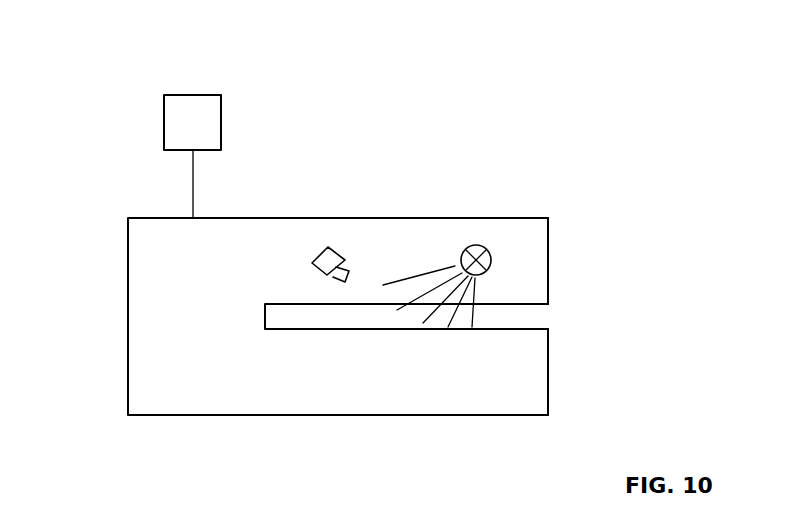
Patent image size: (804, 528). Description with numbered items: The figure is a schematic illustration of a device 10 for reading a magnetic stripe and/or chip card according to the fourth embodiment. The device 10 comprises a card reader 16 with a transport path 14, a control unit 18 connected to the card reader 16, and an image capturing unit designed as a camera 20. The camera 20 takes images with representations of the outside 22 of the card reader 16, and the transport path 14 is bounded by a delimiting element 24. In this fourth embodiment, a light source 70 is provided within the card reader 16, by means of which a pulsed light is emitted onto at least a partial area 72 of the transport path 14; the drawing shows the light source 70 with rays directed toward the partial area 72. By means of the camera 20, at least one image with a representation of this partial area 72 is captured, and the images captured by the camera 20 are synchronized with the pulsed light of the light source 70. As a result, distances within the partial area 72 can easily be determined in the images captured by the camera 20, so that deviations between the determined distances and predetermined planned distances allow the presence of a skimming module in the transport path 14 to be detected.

The device 10 is at (86, 109).
The transport path 14 is at (535, 318).
The card reader 16 is at (145, 348).
The control unit 18 is at (194, 108).
The camera 20 is at (338, 253).
The outside 22 is at (527, 220).
The delimiting element 24 is at (535, 392).
The light source 70 is at (477, 253).
The partial area 72 is at (387, 320).